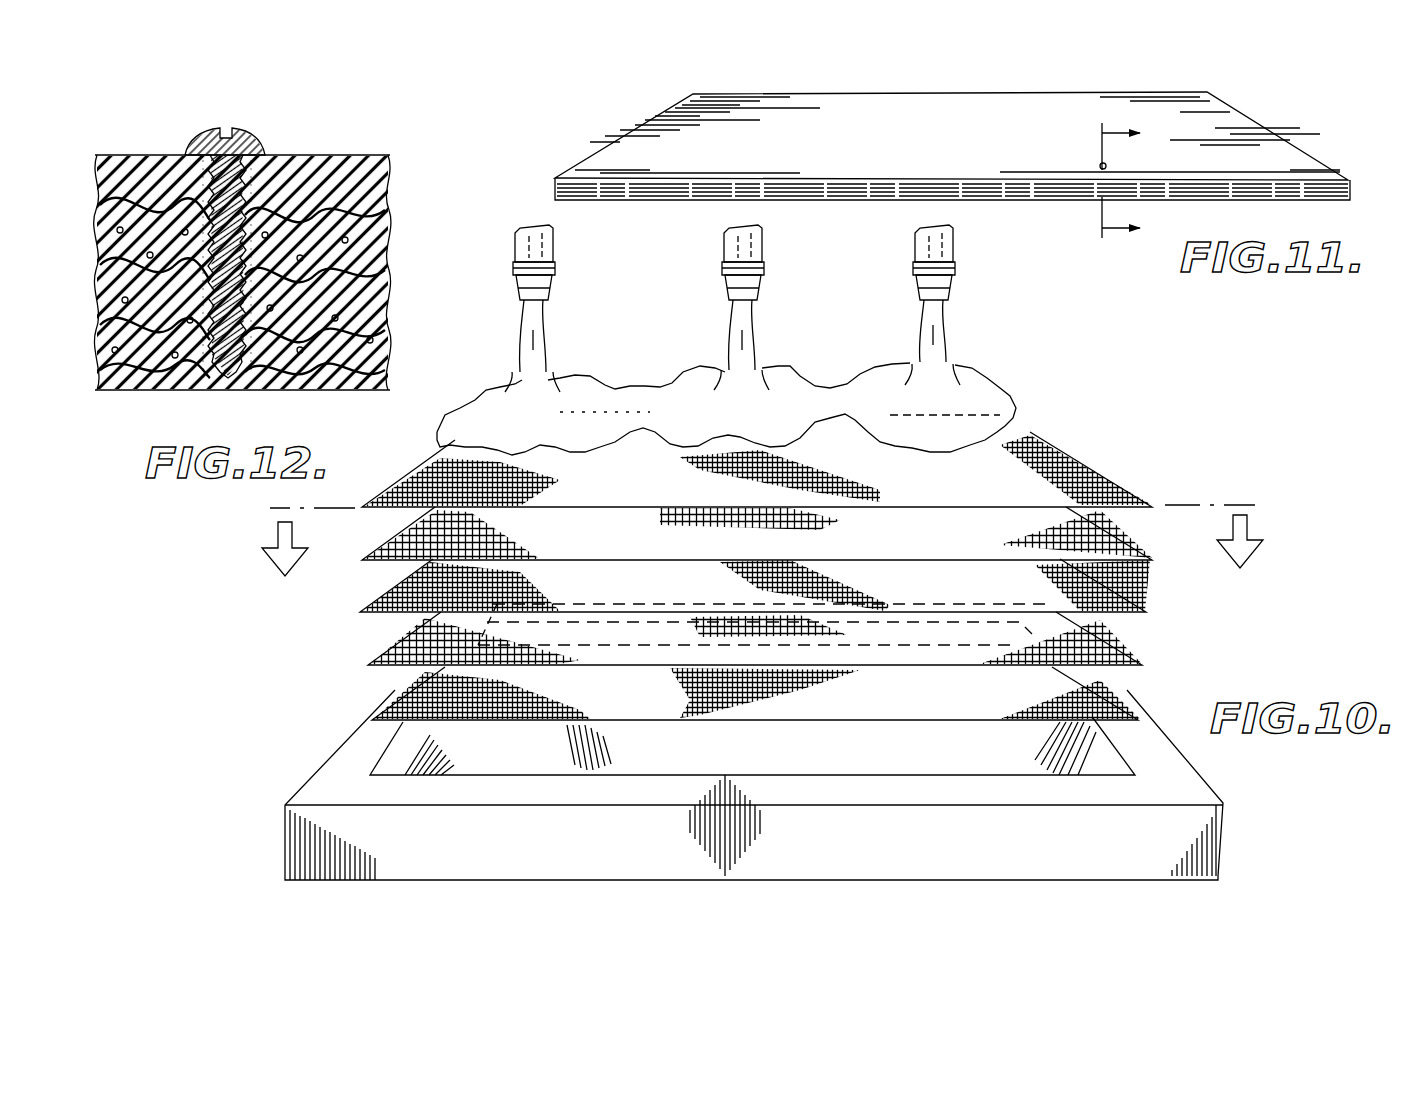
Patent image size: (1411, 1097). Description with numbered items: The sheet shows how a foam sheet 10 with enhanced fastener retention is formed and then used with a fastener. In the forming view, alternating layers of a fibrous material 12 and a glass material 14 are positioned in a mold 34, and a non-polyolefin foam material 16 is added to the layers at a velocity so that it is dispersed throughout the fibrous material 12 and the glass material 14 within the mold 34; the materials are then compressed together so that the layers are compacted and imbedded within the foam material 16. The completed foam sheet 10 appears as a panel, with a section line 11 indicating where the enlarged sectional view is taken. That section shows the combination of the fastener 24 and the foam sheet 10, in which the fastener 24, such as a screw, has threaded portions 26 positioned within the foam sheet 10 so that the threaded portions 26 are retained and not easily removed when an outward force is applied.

In FIG. 12, the foam sheet 10 is at (393, 157).
In FIG. 11, the foam sheet 10 is at (1242, 102).
In FIG. 11, the section line 11— 11 is at (1099, 181).
In FIG. 10, the fibrous material 12 is at (1100, 476).
In FIG. 10, the glass material 14 is at (1112, 545).
In FIG. 10, the non-polyolefin foam material 16 is at (977, 380).
In FIG. 12, the fastener 24 is at (250, 132).
In FIG. 11, the fastener 24 is at (1100, 168).
In FIG. 12, the threaded portions 26 is at (195, 173).
In FIG. 10, the mold 34 is at (1172, 783).